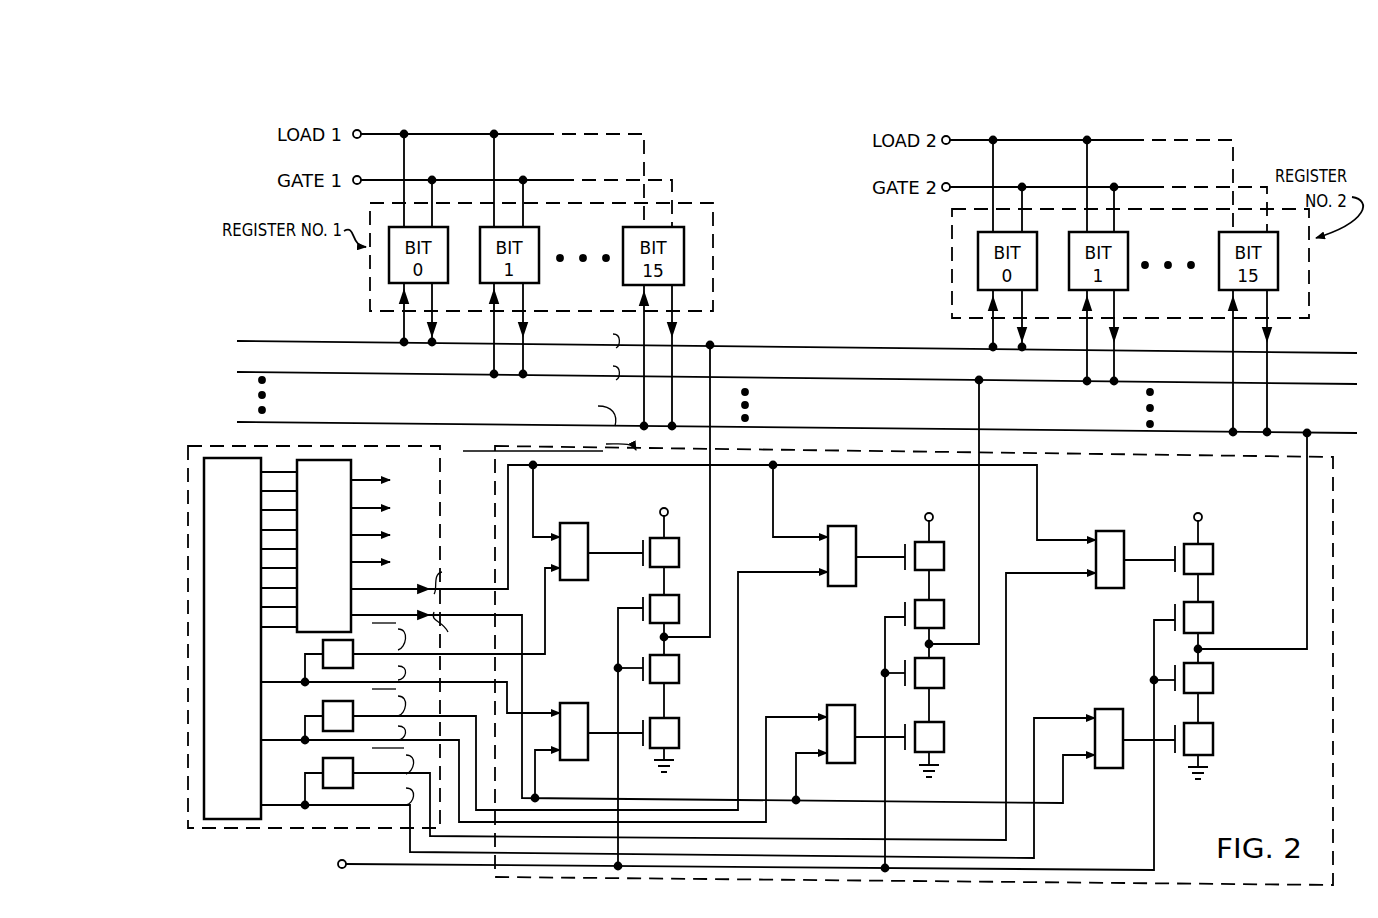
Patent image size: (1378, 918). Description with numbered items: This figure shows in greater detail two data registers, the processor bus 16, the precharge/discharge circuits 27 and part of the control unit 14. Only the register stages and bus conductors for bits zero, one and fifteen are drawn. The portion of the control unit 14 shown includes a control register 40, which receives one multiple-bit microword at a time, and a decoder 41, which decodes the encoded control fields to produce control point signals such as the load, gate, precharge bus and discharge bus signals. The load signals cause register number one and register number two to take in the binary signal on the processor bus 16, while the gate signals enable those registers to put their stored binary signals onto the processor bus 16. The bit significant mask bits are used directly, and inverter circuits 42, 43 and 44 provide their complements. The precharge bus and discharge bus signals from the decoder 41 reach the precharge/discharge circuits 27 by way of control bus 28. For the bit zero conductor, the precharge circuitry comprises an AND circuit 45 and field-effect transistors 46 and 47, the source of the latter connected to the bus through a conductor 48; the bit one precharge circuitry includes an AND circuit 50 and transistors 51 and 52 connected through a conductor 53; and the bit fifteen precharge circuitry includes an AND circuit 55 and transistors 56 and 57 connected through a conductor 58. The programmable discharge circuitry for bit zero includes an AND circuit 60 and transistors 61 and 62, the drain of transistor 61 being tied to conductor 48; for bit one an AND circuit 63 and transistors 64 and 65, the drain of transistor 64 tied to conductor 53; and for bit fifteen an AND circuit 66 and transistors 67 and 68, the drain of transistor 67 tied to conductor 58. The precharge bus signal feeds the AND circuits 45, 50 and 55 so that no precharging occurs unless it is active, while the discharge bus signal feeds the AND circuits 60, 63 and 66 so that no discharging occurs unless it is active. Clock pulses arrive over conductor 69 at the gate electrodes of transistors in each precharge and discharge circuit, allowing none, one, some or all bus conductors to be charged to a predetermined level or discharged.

The control unit 14 is at (440, 490).
The processor bus 16 is at (356, 342).
The precharge/discharge circuits 27 is at (804, 458).
The control bus 28 is at (496, 582).
The control register 40 is at (261, 815).
The decoder 41 is at (350, 470).
The inverter circuit 42 is at (323, 652).
The inverter circuit 43 is at (323, 708).
The inverter circuit 44 is at (323, 768).
The AND circuit 45 is at (566, 582).
The field-effect transistor 46 is at (654, 540).
The field-effect transistor 47 is at (654, 596).
The conductor 48 is at (712, 518).
The AND circuit 50 is at (851, 586).
The field-effect transistor 51 is at (936, 545).
The field-effect transistor 52 is at (936, 604).
The conductor 53 is at (979, 500).
The AND circuit 55 is at (1118, 588).
The field-effect transistor 56 is at (1208, 562).
The field-effect transistor 57 is at (1208, 620).
The conductor 58 is at (1310, 516).
The AND circuit 60 is at (568, 703).
The field-effect transistor 61 is at (672, 683).
The field-effect transistor 62 is at (672, 750).
The AND circuit 63 is at (840, 710).
The field-effect transistor 64 is at (944, 676).
The field-effect transistor 65 is at (944, 738).
The AND circuit 66 is at (1105, 768).
The field-effect transistor 67 is at (1213, 684).
The field-effect transistor 68 is at (1213, 746).
The conductor 69 is at (383, 868).